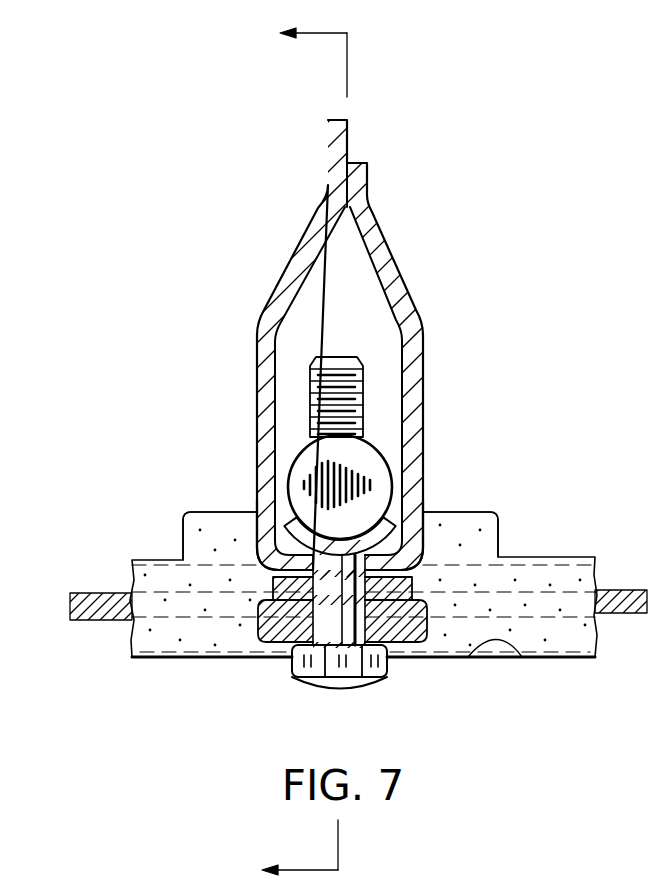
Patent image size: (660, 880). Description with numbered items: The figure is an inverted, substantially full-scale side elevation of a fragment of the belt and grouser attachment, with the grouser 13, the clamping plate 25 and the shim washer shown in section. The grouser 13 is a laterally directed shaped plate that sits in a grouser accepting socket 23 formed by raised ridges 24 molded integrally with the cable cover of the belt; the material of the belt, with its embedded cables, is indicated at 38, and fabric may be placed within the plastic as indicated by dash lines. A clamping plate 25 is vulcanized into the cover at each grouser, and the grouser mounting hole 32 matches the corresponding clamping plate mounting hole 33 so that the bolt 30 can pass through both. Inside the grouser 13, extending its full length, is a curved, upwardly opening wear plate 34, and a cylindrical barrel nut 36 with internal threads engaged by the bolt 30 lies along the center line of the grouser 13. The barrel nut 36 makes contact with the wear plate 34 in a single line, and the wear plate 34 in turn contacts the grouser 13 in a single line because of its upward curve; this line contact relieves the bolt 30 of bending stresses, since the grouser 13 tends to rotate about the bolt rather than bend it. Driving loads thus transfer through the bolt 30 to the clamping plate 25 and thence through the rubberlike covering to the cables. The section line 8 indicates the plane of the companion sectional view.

The section line 8- 8 is at (287, 449).
The grouser 13 is at (287, 263).
The grouser accepting socket 23 is at (427, 500).
The raised ridge 24 is at (218, 522).
The clamping plate 25 is at (402, 643).
The bolt 30 is at (335, 683).
The grouser mounting hole 32 is at (432, 643).
The clamping plate mounting hole 33 is at (320, 690).
The wear plate 34 is at (262, 492).
The barrel nut 36 is at (373, 458).
The mounting board 38 is at (520, 557).